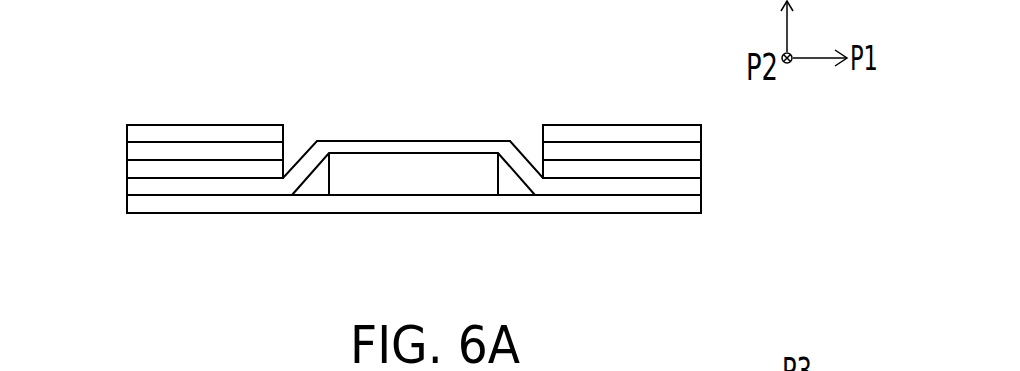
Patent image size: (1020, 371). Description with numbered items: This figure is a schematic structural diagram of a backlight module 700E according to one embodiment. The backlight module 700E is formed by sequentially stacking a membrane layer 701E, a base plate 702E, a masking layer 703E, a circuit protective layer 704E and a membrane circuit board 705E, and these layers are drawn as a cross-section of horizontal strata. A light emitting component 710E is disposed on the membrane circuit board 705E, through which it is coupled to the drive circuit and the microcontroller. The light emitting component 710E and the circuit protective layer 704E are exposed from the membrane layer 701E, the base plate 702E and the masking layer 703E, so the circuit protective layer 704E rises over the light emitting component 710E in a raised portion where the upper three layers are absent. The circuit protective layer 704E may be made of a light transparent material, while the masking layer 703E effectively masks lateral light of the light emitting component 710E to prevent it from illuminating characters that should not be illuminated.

The backlight module 700E is at (812, 291).
The membrane layer 701E is at (132, 136).
The base plate 702E is at (132, 141).
The masking layer 703E is at (132, 173).
The circuit protective layer 704E is at (132, 187).
The membrane circuit board 705E is at (132, 207).
The light emitting component 710E is at (409, 183).